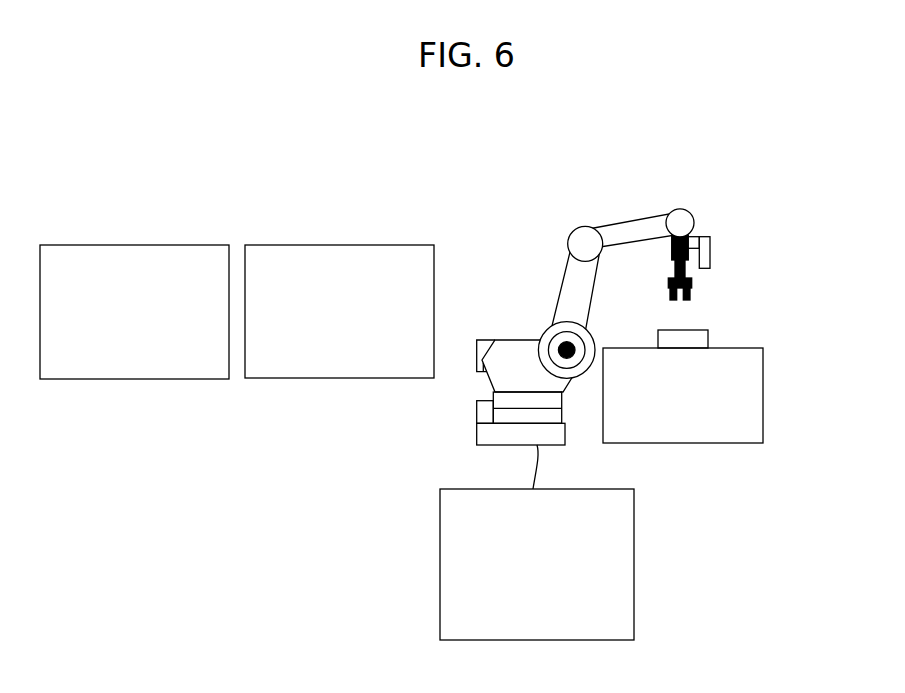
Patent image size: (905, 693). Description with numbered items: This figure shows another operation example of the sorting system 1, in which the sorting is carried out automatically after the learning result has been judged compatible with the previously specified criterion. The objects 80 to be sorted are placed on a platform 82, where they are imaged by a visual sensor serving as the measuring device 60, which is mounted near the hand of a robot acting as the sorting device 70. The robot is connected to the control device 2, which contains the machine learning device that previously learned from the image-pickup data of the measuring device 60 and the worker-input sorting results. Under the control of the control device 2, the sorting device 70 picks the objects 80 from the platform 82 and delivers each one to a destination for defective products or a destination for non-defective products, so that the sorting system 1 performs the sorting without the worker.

The sorting system 1 is at (170, 165).
The control device 2 is at (500, 489).
The measuring device 60 is at (710, 237).
The sorting device 70 is at (680, 209).
The objects to be sorted 80 is at (708, 330).
The platform 82 is at (763, 398).